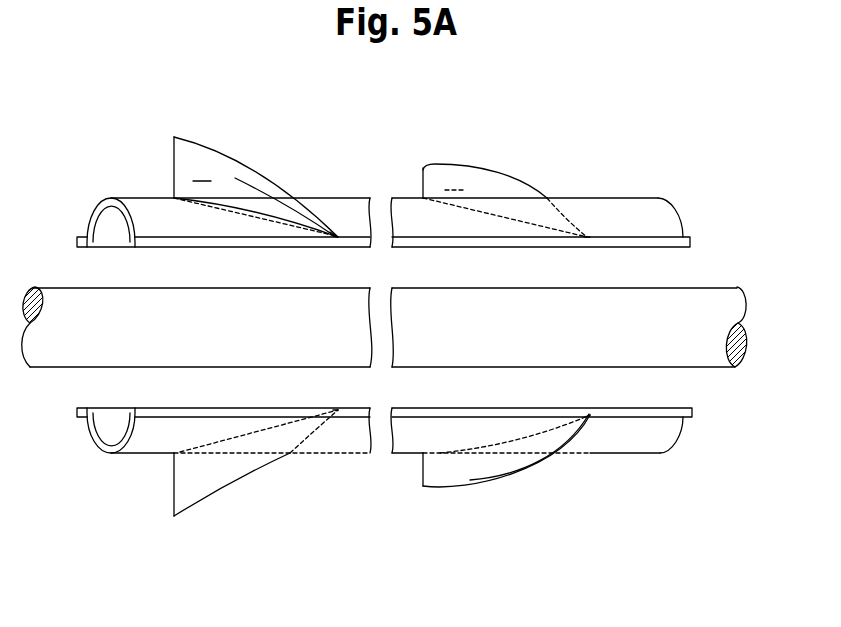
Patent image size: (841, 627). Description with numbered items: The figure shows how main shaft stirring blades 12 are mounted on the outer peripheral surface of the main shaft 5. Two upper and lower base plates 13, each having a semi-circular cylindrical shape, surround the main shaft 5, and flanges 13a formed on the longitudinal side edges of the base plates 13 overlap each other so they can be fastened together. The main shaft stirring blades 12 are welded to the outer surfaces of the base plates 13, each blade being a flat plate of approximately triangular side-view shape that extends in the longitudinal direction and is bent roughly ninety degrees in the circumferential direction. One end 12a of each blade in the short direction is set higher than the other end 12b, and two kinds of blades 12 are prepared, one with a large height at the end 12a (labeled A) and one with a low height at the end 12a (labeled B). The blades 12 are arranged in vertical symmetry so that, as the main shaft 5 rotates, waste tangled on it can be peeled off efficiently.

The main shaft 5 is at (709, 288).
The main shaft stirring blade 12 is at (253, 172).
The one end of the main shaft stirring blade in the short direction 12a is at (179, 137).
The other end of the main shaft stirring blade in the short direction 12b is at (333, 226).
The base plate 13 is at (346, 198).
The flange 13a is at (83, 236).